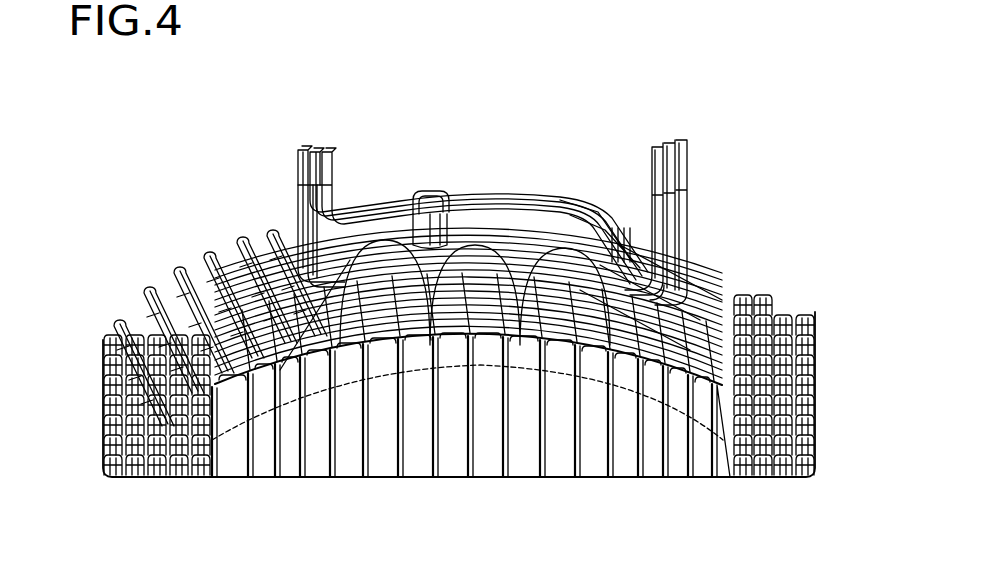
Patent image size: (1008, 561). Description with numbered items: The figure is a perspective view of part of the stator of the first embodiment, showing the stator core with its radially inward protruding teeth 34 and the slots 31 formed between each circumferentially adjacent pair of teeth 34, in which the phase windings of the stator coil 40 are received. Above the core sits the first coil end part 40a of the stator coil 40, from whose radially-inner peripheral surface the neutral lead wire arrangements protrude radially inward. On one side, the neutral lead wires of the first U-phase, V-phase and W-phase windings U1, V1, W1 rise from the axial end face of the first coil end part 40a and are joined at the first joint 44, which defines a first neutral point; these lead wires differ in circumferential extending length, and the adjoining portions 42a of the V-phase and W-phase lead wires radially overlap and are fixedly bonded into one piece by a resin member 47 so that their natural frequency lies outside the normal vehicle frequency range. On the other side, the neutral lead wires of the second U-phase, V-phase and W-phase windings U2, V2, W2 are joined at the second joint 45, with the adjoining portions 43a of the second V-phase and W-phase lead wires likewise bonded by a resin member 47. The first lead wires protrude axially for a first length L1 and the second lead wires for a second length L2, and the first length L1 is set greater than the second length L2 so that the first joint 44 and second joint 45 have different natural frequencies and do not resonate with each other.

The slots 31 is at (436, 432).
The teeth 34 is at (555, 433).
The stator coil 40 is at (445, 291).
The first coil end part 40a is at (139, 277).
The adjoining portions 42a is at (598, 212).
The adjoining portions 43a is at (390, 207).
The first joint 44 is at (651, 181).
The second joint 45 is at (434, 183).
The resin member 47 is at (615, 227).
The first U-phase winding U1 is at (678, 135).
The first V-phase winding V1 is at (628, 227).
The first W-phase winding W1 is at (543, 193).
The second U-phase winding U2 is at (308, 150).
The second V-phase winding V2 is at (477, 187).
The second W-phase winding W2 is at (362, 192).
The first length L1 is at (683, 133).
The second length L2 is at (297, 268).